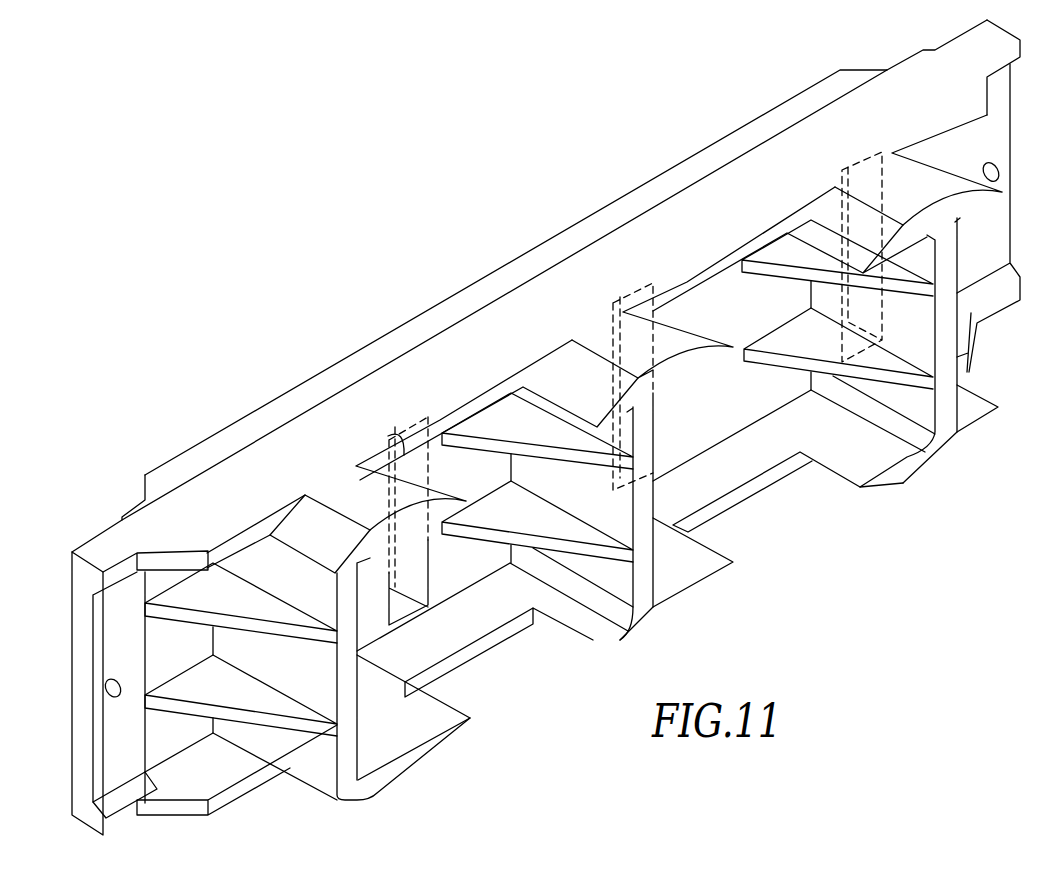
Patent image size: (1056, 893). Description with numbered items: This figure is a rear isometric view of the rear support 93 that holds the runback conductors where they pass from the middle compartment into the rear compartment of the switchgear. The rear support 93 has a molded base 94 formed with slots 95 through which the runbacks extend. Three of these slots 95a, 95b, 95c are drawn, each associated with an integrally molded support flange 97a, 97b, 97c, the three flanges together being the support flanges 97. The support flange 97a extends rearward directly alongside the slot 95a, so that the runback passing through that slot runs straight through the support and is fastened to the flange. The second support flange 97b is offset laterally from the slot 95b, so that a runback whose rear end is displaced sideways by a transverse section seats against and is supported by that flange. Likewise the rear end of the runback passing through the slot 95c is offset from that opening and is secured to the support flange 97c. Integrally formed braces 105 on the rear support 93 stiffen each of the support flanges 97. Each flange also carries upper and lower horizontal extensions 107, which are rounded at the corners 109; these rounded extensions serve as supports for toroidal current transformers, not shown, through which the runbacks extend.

The rear support 93 is at (238, 383).
The molded base 94 is at (427, 348).
The slots 95 is at (518, 653).
The slot 95a is at (870, 183).
The slot 95b is at (643, 342).
The slot 95c is at (413, 566).
The support flanges 97 is at (721, 541).
The support flange 97a is at (948, 387).
The support flange 97b is at (648, 523).
The support flange 97c is at (350, 737).
The braces 105 is at (242, 603).
The horizontal extensions 107 is at (343, 488).
The rounded corners 109 is at (305, 512).